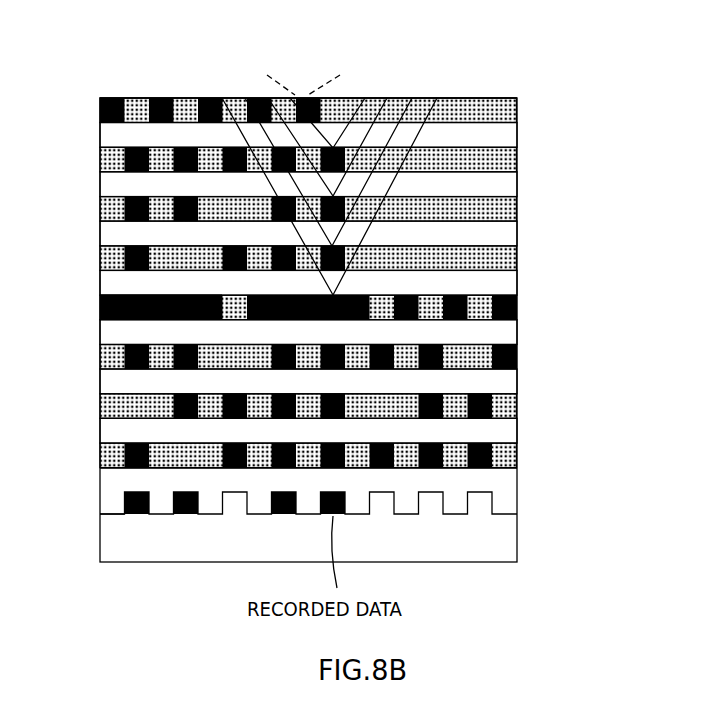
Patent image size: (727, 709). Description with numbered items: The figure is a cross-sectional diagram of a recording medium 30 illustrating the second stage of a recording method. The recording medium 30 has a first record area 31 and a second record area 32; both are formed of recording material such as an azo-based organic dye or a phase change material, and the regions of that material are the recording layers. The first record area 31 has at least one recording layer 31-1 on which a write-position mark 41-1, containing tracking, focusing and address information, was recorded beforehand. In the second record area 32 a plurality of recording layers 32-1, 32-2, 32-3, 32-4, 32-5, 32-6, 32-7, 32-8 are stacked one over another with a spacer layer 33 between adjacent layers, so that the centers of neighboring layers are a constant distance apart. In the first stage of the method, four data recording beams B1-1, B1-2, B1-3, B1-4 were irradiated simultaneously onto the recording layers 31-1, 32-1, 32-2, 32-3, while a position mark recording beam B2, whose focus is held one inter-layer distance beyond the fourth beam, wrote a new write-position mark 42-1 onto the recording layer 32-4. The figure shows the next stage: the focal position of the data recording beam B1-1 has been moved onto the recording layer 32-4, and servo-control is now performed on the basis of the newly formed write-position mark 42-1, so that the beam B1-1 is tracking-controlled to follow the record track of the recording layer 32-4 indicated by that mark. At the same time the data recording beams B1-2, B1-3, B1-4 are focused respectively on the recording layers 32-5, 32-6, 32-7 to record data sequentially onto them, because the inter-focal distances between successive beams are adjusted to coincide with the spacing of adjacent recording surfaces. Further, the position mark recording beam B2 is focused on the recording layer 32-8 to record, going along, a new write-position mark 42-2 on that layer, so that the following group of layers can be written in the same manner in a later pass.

The recording medium 30 is at (121, 64).
The first record area 31 is at (384, 541).
The recording layer 31-1 is at (508, 507).
The second record area 32 is at (383, 281).
The recording layer 32-1 is at (518, 453).
The recording layer 32-2 is at (518, 406).
The recording layer 32-3 is at (518, 357).
The recording layer 32-4 is at (518, 308).
The recording layer 32-5 is at (518, 258).
The recording layer 32-6 is at (518, 209).
The recording layer 32-7 is at (518, 160).
The recording layer 32-8 is at (518, 111).
The spacer layer 33 is at (505, 135).
The write-position mark 41-1 is at (457, 516).
The write-position mark 42-1 is at (117, 297).
The top surface of medium 42-2 is at (112, 97).
The data recording beam B1-1 is at (343, 287).
The data recording beam B1-2 is at (340, 233).
The data recording beam B1-3 is at (347, 185).
The data recording beam B1-4 is at (355, 132).
The position mark recording beam B2 is at (336, 82).